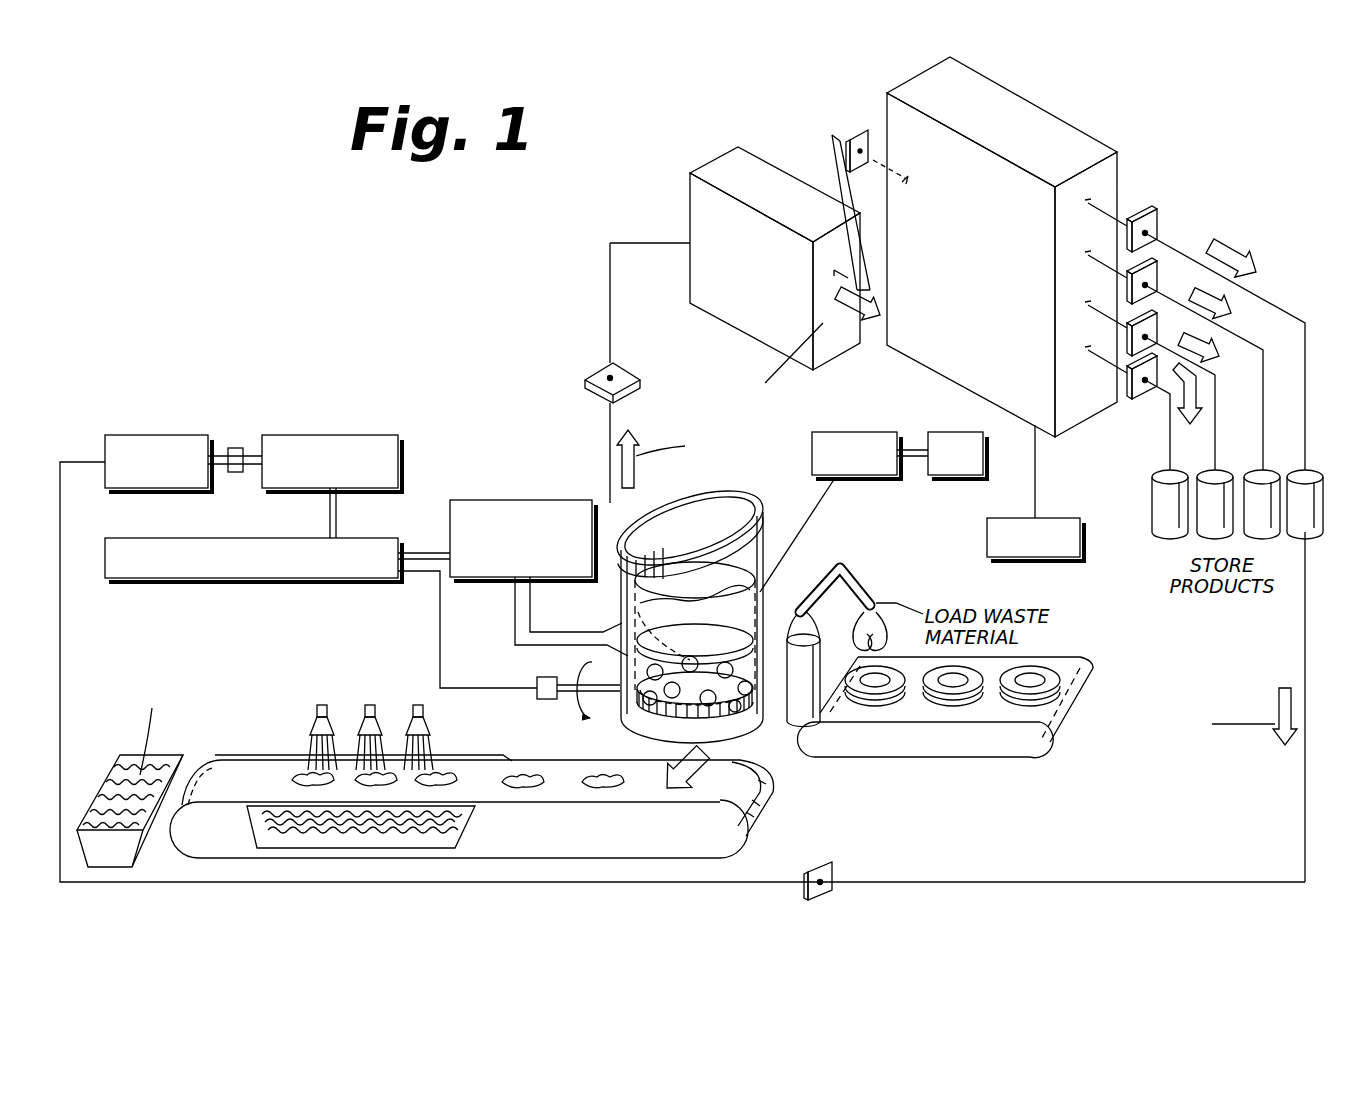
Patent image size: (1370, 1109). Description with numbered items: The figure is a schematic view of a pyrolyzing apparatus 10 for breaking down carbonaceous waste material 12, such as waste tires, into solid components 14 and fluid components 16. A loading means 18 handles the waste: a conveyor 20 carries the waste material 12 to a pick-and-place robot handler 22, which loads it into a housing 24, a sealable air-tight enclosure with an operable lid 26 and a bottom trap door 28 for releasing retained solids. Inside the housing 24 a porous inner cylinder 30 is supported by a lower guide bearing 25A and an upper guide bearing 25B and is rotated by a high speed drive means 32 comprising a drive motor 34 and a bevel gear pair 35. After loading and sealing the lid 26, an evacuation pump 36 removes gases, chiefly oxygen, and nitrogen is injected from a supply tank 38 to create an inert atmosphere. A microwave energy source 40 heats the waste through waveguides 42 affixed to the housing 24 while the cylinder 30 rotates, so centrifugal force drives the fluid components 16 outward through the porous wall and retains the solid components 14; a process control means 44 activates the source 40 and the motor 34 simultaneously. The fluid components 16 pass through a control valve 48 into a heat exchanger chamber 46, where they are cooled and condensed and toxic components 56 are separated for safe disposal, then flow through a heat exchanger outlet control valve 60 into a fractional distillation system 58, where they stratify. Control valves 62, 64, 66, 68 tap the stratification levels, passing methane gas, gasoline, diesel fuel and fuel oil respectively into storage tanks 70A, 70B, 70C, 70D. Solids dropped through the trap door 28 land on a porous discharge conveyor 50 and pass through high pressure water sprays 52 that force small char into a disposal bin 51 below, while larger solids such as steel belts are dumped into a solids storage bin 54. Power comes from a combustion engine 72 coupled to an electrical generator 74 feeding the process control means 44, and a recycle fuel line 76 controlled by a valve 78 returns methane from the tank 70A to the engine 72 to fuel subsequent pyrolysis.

The pyrolyzing apparatus 10 is at (415, 300).
The carbonaceous waste material 12 is at (1028, 695).
The solid components 14 is at (312, 775).
The fluid components 16 is at (634, 478).
The loading means 18 is at (1003, 651).
The conveyor 20 is at (1070, 668).
The pick-and-place robot handler 22 is at (800, 713).
The housing 24 is at (746, 558).
The lower guide bearing 25A is at (712, 699).
The upper guide bearing 25B is at (735, 618).
The operable lid 26 is at (655, 528).
The bottom trap door 28 is at (742, 780).
The porous inner cylinder 30 is at (640, 622).
The high speed drive means 32 is at (572, 714).
The drive motor 34 is at (537, 694).
The bevel gear pair 35 is at (637, 683).
The evacuation pump 36 is at (870, 477).
The supply tank 38 is at (948, 477).
The microwave energy source 40 is at (512, 500).
The waveguides 42 is at (515, 624).
The process control means 44 is at (228, 540).
The heat exchanger chamber 46 is at (733, 165).
The control valve 48 is at (585, 386).
The porous discharge conveyor 50 is at (655, 790).
The disposal bin 51 is at (455, 835).
The high pressure water sprays 52 is at (325, 698).
The solids storage bin 54 is at (112, 775).
The toxic components 56 is at (1040, 518).
The fractional distillation system 58 is at (1040, 120).
The heat exchanger outlet control valve 60 is at (858, 133).
The control valve 62 is at (1143, 222).
The control valve 64 is at (1152, 275).
The control valve 66 is at (1130, 342).
The control valve 68 is at (1140, 396).
The storage tank 70A is at (1302, 470).
The storage tank 70B is at (1260, 470).
The storage tank 70C is at (1206, 533).
The storage tank 70D is at (1164, 527).
The combustion engine 72 is at (165, 437).
The electrical generator 74 is at (328, 437).
The recycle fuel line 76 is at (1300, 632).
The valve 78 is at (826, 870).